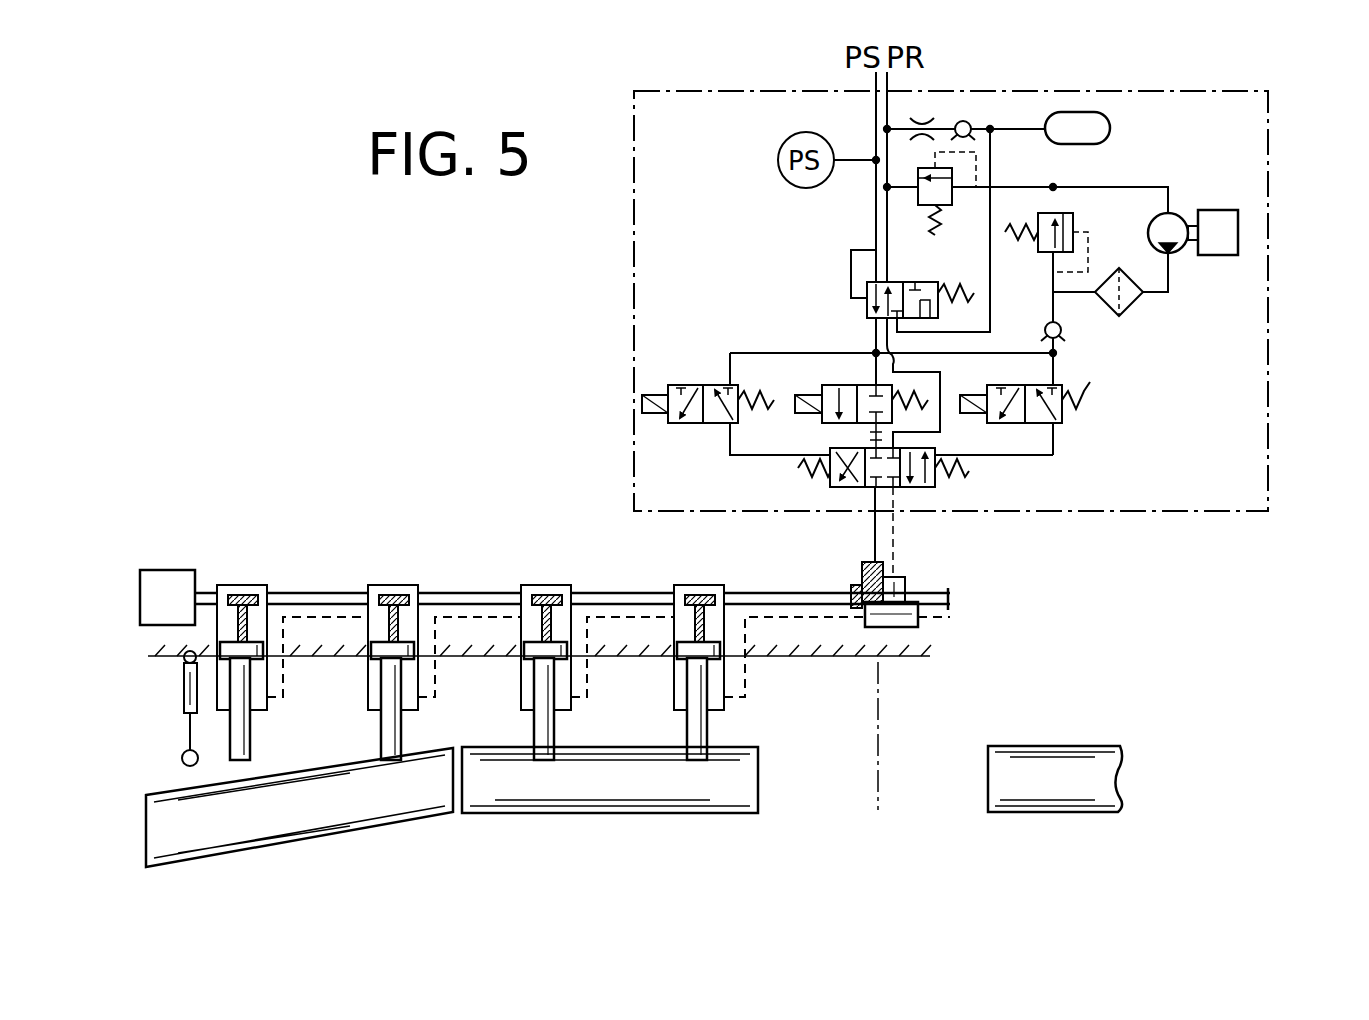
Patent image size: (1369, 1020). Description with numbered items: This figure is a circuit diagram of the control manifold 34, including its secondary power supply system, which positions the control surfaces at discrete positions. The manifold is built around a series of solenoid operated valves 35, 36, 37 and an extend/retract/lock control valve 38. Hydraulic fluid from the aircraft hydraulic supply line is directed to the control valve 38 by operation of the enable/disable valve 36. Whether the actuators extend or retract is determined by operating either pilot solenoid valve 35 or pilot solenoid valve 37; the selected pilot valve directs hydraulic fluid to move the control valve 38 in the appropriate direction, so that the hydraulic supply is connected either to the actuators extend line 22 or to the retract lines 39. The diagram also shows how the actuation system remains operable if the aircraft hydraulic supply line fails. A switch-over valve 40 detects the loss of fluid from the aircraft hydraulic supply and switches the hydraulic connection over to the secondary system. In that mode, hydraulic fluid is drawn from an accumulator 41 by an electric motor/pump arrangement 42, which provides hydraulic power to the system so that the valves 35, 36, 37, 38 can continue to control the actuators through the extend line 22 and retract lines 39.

The actuators extend line 22 is at (470, 592).
The control manifold 34 is at (1190, 89).
The pilot solenoid valve 35 is at (668, 424).
The enable/disable valve 36 is at (839, 385).
The pilot solenoid valve 37 is at (1062, 418).
The extend/retract/lock control valve 38 is at (915, 490).
The retract lines 39 is at (628, 617).
The switch-over valve 40 is at (851, 282).
The accumulator 41 is at (1092, 128).
The electric motor/pump arrangement 42 is at (1190, 210).